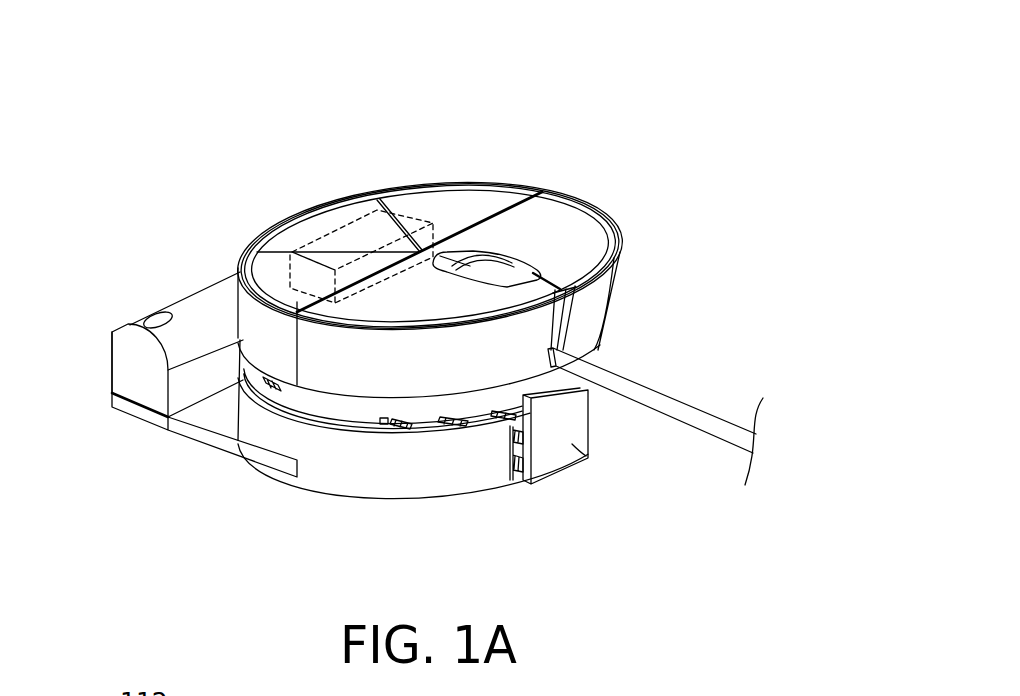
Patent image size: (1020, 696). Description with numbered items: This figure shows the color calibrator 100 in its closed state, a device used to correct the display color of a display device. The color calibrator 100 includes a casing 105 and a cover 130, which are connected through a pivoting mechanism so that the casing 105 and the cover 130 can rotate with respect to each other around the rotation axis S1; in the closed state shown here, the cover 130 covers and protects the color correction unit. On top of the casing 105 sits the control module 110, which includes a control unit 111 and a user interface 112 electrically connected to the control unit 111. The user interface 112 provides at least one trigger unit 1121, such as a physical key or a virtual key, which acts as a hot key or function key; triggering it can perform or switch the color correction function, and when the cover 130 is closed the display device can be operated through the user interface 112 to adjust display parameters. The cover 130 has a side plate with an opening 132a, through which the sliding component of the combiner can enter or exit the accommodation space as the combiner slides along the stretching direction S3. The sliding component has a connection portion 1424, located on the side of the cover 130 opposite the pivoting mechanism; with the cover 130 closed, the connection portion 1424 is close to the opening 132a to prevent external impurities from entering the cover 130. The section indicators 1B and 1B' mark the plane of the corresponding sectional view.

The color calibrator 100 is at (308, 79).
The control module 110 is at (549, 123).
The control unit 111 is at (428, 222).
The user interface 112 is at (516, 194).
The trigger unit 1121 is at (324, 222).
The casing 105 is at (620, 263).
The cover 130 is at (405, 480).
The opening 132a is at (527, 480).
The connection portion 1424 is at (580, 462).
The rotation axis S1 is at (140, 360).
The stretching direction S3 is at (572, 442).
The section line 1B is at (166, 187).
The section line 1B' is at (673, 372).